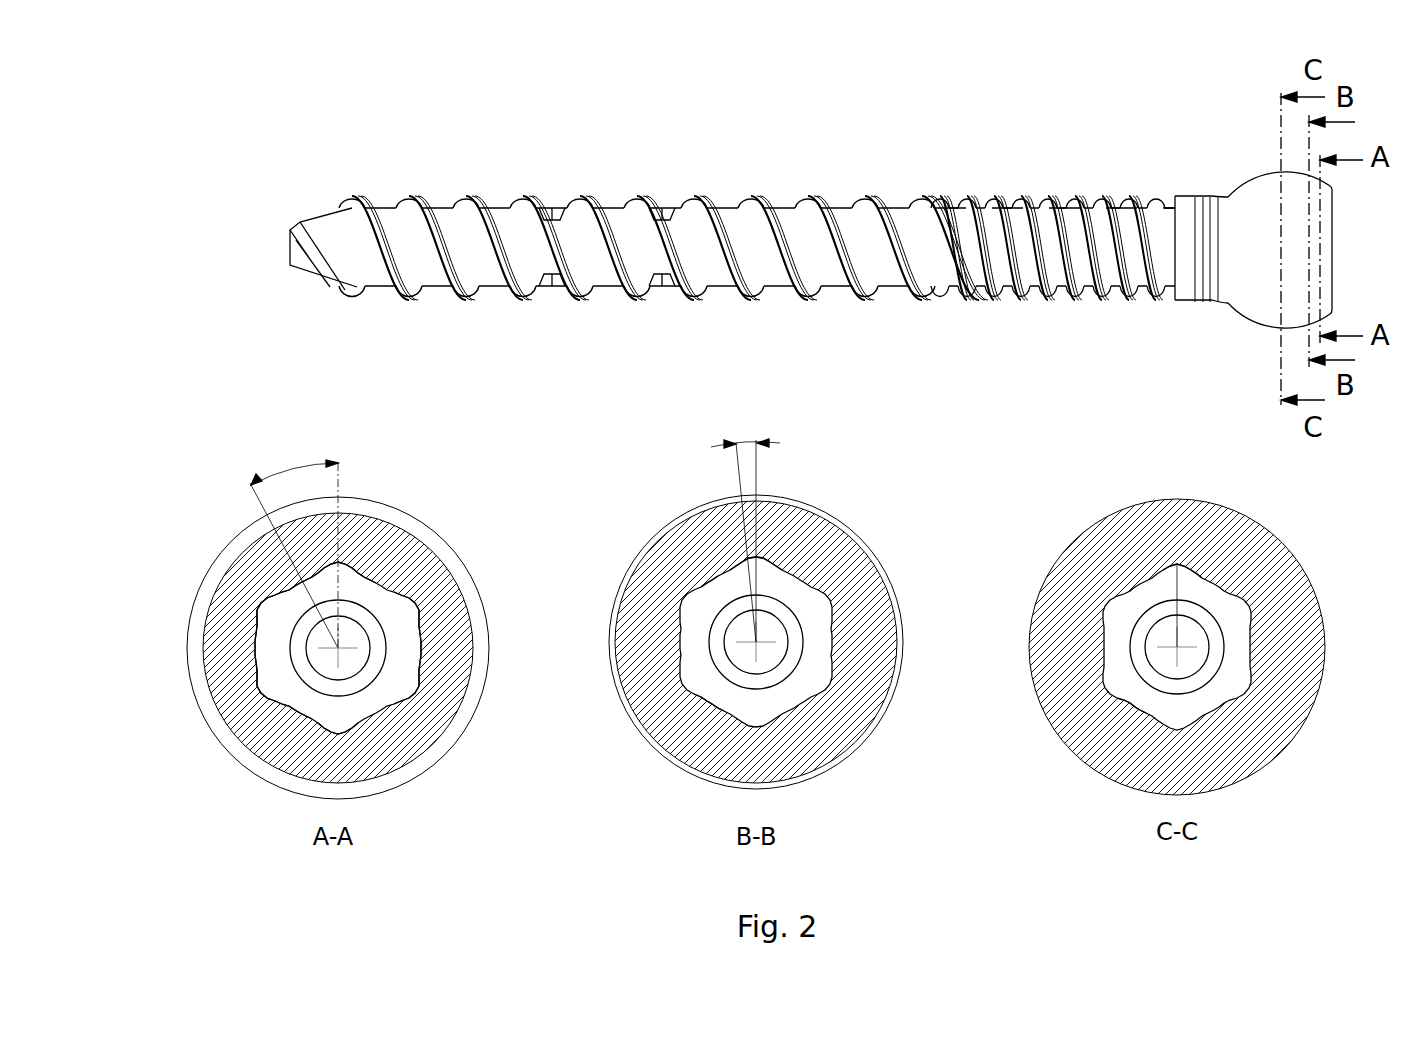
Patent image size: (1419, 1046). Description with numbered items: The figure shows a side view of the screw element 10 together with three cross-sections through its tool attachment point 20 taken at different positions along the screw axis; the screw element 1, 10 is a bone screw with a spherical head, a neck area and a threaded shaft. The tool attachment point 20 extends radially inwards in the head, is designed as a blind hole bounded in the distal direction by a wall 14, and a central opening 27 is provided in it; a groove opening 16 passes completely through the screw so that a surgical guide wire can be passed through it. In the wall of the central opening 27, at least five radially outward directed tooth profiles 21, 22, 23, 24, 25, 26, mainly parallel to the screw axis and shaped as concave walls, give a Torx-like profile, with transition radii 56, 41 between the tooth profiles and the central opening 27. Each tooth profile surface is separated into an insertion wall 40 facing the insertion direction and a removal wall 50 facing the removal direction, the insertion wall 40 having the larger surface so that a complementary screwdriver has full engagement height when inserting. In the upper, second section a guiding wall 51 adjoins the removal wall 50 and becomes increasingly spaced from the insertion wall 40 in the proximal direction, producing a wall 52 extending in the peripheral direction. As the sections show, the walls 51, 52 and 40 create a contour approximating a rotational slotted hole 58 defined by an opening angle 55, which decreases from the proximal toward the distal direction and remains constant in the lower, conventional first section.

The bone screw 1 is at (287, 122).
The screw element 10 is at (811, 250).
The wall 14 is at (393, 618).
The groove opening 16 is at (322, 668).
The tool attachment point 20 is at (273, 642).
The tooth profile 21 is at (348, 567).
The tooth profile 22 is at (417, 607).
The tooth profile 23 is at (417, 687).
The tooth profile 24 is at (343, 732).
The tooth profile 25 is at (270, 693).
The tooth profile 26 is at (258, 609).
The central opening 27 is at (307, 707).
The insertion wall 40 is at (370, 565).
The transition radius 41 is at (370, 577).
The removal wall 50 is at (335, 567).
The guiding wall 51 is at (297, 577).
The wall extending in the peripheral direction 52 is at (313, 568).
The opening angle 55 is at (1175, 580).
The transition radius 56 is at (290, 588).
The rotational slotted hole 58 is at (425, 657).